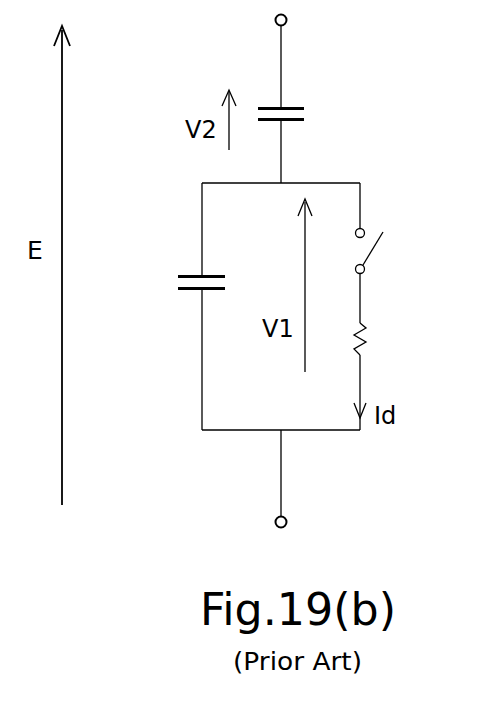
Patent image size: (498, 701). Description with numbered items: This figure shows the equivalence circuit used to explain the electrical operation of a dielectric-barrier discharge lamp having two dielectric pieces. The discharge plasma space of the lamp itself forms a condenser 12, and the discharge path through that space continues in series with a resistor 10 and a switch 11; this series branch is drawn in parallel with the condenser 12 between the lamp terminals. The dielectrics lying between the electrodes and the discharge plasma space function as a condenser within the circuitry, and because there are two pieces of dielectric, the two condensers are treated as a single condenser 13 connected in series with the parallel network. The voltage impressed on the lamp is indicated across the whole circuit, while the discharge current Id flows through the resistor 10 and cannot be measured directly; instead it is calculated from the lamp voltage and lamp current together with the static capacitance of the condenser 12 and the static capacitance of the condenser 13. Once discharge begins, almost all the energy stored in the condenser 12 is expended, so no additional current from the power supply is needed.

The resistor 10 is at (368, 342).
The switch 11 is at (375, 247).
The condenser 12 is at (181, 290).
The condenser 13 is at (300, 117).